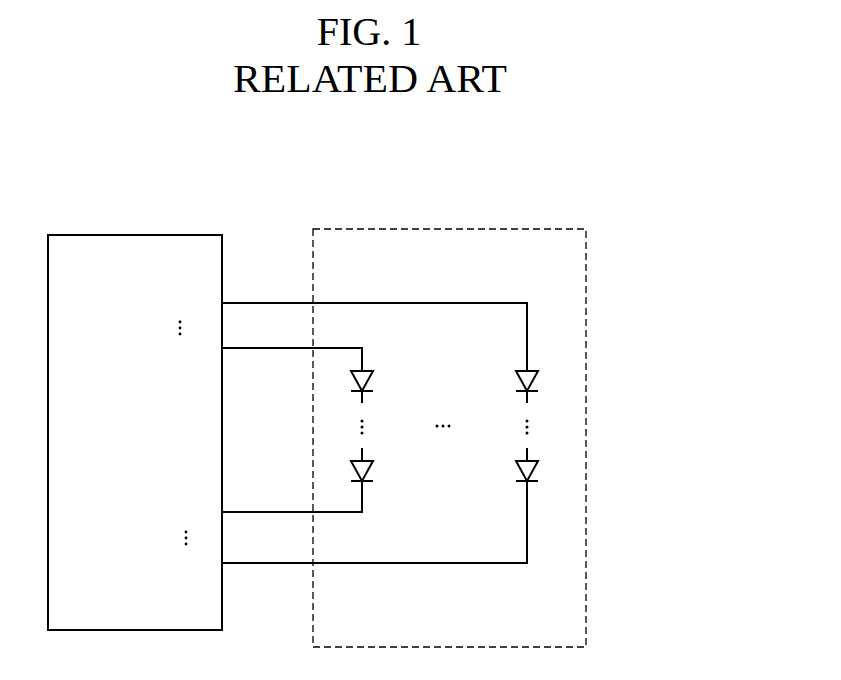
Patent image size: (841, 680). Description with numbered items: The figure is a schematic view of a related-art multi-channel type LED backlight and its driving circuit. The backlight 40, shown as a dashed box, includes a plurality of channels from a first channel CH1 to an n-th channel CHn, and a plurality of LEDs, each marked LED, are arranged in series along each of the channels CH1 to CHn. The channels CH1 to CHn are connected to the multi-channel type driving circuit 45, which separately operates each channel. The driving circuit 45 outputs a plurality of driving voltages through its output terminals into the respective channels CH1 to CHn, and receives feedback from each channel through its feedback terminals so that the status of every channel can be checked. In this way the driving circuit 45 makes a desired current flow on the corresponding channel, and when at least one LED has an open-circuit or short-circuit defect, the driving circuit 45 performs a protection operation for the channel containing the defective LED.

The multi-channel type driving circuit 45 is at (133, 235).
The backlight 40 is at (586, 229).
The element LED is at (538, 462).
The first channel CH1 is at (362, 334).
The n-th channel CHn is at (527, 292).